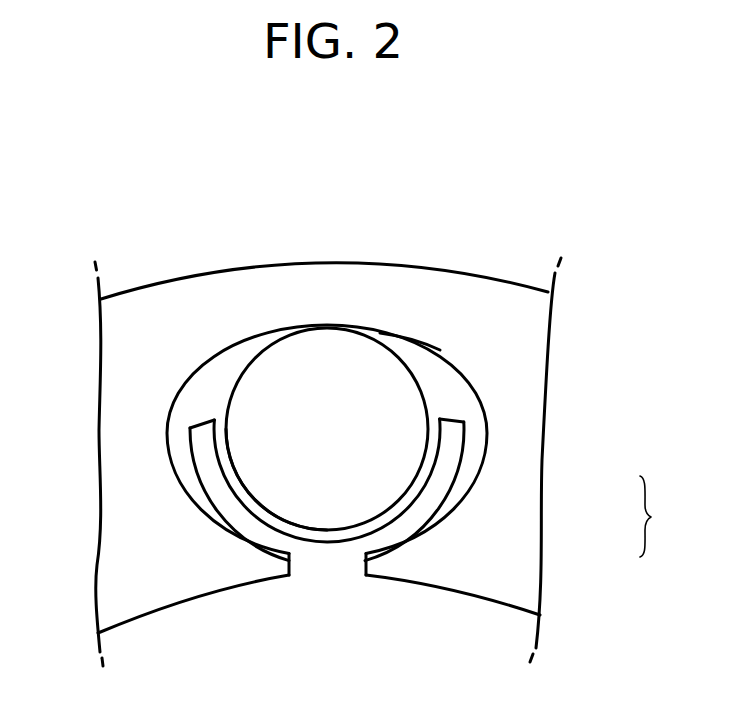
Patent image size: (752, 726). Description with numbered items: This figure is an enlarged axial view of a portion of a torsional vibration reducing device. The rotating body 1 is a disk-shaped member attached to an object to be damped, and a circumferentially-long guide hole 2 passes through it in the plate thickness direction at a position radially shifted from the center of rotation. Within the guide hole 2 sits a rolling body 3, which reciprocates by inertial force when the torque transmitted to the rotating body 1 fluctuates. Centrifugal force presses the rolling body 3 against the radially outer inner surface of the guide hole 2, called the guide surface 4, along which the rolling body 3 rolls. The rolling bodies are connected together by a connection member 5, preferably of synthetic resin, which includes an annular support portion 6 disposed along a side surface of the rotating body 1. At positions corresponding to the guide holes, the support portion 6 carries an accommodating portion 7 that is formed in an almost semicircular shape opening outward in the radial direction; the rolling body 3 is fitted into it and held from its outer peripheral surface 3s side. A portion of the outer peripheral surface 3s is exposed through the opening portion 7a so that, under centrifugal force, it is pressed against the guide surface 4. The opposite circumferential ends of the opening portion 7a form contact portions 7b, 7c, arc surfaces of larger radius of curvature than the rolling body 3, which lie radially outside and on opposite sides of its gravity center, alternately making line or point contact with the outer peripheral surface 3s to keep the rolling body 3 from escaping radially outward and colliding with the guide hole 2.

The rotating body 1 is at (532, 337).
The guide hole 2 is at (460, 392).
The rolling body 3 is at (322, 343).
The outer peripheral surface 3s is at (247, 493).
The guide surface 4 is at (407, 341).
The connection member 5 is at (657, 516).
The support portion 6 is at (465, 567).
The accommodating portion 7 is at (430, 482).
The opening portion 7a is at (218, 400).
The contact portion 7b is at (440, 428).
The contact portion 7c is at (190, 427).